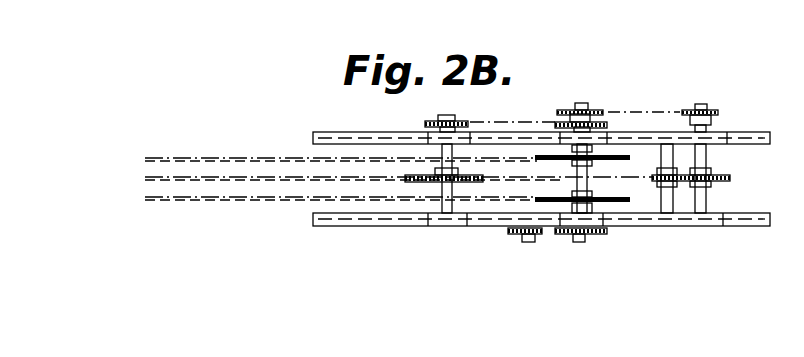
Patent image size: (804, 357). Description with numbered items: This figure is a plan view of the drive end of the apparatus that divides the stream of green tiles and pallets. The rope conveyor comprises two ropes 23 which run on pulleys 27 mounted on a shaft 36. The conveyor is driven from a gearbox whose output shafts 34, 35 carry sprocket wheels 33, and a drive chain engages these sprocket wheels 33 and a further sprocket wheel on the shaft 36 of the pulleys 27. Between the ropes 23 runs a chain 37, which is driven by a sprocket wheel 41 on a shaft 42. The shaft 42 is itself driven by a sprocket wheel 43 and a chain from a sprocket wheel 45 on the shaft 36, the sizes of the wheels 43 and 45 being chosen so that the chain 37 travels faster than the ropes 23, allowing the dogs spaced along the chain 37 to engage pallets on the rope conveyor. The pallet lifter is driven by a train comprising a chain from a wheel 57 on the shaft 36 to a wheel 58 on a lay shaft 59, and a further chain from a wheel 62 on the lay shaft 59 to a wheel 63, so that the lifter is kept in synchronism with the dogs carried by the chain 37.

The ropes 23 is at (164, 198).
The chain 37 is at (197, 178).
The sprocket wheel 41 is at (410, 183).
The shaft 42 is at (466, 102).
The sprocket wheel 43 is at (432, 122).
The sprocket wheel 45 is at (558, 122).
The wheel 57 is at (595, 112).
The wheel 58 is at (699, 108).
The lay shaft 59 is at (712, 111).
The wheel 62 is at (728, 178).
The wheel 63 is at (656, 182).
The pulleys 27 is at (538, 160).
The sprocket wheels 33 is at (520, 236).
The gearbox output shaft 34 is at (533, 242).
The gearbox output shaft 35 is at (607, 232).
The shaft 36 is at (584, 242).